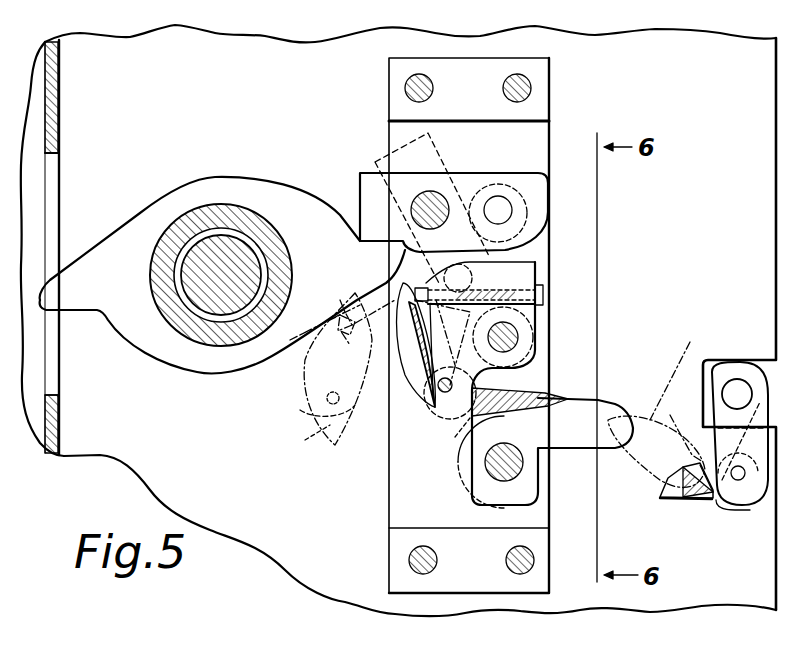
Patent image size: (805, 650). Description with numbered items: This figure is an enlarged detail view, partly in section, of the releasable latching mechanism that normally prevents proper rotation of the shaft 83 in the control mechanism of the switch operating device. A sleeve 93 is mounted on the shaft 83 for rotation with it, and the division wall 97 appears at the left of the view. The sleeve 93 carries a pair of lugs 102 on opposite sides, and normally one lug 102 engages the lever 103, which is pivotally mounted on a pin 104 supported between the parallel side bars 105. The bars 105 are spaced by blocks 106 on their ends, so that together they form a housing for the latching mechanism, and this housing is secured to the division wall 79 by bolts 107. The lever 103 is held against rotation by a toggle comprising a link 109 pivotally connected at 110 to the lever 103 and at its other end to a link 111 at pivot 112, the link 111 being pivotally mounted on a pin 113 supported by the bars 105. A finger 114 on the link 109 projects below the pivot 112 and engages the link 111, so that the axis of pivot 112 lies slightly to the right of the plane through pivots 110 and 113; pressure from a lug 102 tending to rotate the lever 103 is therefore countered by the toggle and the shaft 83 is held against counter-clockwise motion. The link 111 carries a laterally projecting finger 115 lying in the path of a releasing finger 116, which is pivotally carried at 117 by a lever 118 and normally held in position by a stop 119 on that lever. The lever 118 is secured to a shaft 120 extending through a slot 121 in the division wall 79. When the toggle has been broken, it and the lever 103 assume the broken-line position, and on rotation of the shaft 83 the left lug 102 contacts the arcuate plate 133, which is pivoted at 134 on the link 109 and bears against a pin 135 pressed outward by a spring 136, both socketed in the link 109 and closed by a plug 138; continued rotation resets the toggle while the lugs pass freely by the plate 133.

The division wall 79 is at (257, 44).
The shaft 83 is at (200, 308).
The sleeve 93 is at (229, 352).
The division wall 97 is at (50, 440).
The lugs 102 is at (70, 300).
The lever 103 is at (362, 184).
The pin 104 is at (425, 200).
The parallel side bars 105 is at (542, 147).
The blocks 106 is at (395, 108).
The bolts 107 is at (502, 88).
The link 109 is at (527, 248).
The pivot 110 is at (500, 212).
The link 111 is at (537, 383).
The pivot 112 is at (500, 341).
The pin 113 is at (505, 479).
The finger 114 is at (323, 439).
The finger 115 is at (585, 345).
The releasing finger 116 is at (640, 506).
The pivot 117 is at (781, 471).
The lever 118 is at (745, 505).
The stop 119 is at (713, 497).
The shaft 120 is at (752, 395).
The slot 121 is at (712, 372).
The arcuate plate 133 is at (410, 313).
The pivot 134 is at (443, 392).
The pin 135 is at (426, 285).
The spring 136 is at (552, 271).
The plug 138 is at (544, 293).